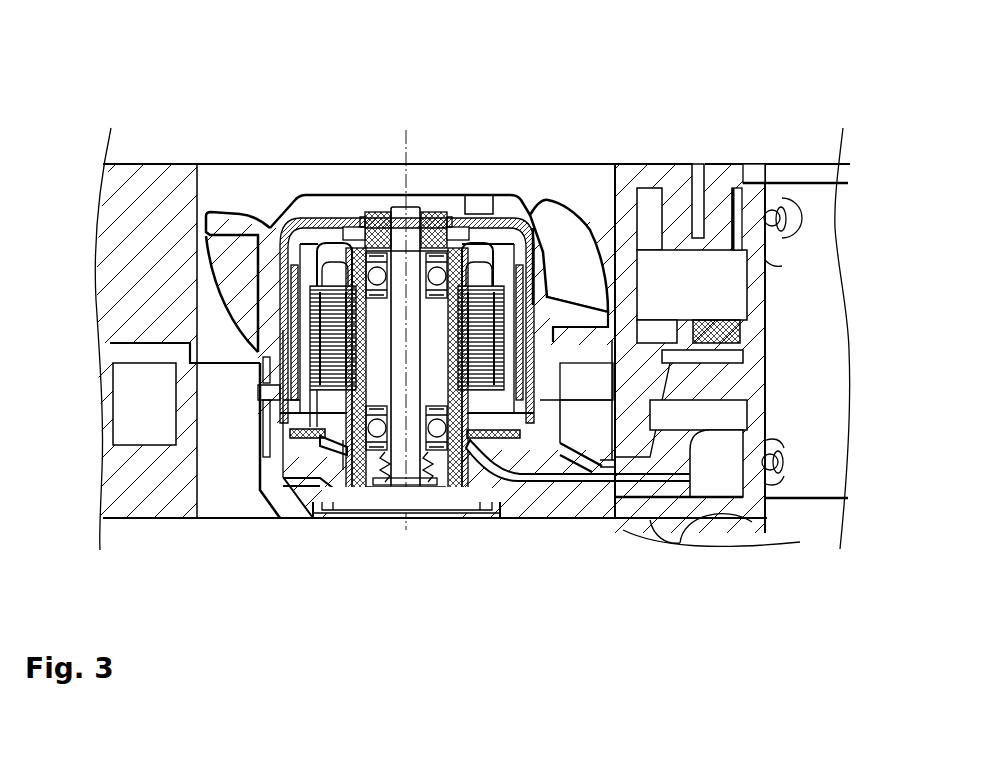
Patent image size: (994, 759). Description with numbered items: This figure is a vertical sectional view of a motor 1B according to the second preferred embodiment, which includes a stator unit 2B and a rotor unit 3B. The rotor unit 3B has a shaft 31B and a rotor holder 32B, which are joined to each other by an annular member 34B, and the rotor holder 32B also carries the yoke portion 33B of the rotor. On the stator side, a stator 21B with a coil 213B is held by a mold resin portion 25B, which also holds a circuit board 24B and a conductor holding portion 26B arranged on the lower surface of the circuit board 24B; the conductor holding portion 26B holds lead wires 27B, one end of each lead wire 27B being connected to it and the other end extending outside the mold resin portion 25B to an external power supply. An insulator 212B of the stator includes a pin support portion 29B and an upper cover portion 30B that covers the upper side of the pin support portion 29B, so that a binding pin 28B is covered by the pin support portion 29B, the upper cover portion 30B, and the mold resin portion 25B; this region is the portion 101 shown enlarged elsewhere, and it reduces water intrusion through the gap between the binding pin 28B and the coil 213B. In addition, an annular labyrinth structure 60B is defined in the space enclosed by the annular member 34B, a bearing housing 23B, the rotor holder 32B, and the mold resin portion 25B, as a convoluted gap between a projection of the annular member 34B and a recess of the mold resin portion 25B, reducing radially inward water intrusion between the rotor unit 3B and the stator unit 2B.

The motor 1B is at (459, 87).
The rotor unit 3B is at (407, 90).
The rotor cup / yoke 33B is at (300, 220).
The rotor holder 32B is at (330, 238).
The annular member 34B is at (372, 210).
The shaft 31B is at (396, 237).
The labyrinth structure 60B is at (480, 228).
The coil 213B is at (337, 277).
The upper cover portion 30B is at (255, 387).
The pin support portion 29B is at (300, 425).
The binding pin 28B is at (305, 447).
The portion 101 is at (203, 518).
The insulator 212B is at (267, 518).
The stator 21B is at (333, 518).
The bearing housing 23B is at (357, 518).
The stator unit 2B is at (375, 528).
The circuit board 24B is at (463, 518).
The conductor holding portion 26B is at (512, 518).
The lead wire 27B is at (567, 518).
The mold resin portion 25B is at (593, 518).